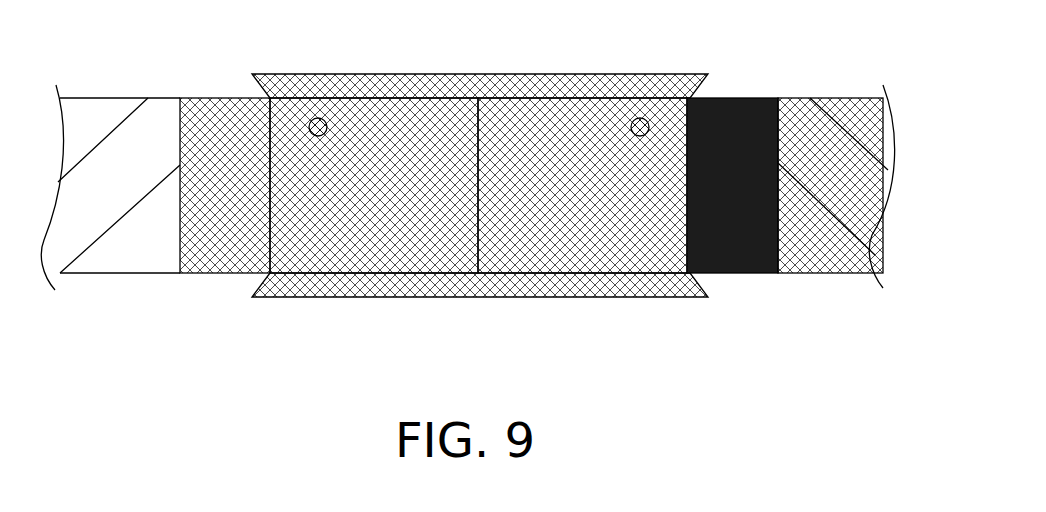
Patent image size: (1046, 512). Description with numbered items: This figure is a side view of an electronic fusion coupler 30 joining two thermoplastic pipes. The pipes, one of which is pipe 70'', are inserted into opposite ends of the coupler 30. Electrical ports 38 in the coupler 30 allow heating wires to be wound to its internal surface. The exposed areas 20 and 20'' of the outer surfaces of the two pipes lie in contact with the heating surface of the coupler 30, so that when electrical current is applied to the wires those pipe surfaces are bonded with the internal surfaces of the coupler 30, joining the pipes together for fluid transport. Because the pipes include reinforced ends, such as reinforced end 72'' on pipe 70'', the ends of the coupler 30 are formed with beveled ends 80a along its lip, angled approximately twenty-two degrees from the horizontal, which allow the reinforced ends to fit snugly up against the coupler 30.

The exposed area 20 is at (374, 148).
The exposed area 20'' is at (582, 148).
The coupler 30 is at (478, 207).
The electrical port 38 is at (318, 127).
The pipe 70'' is at (866, 186).
The reinforced end 72'' is at (762, 230).
The beveled end 80a is at (259, 84).